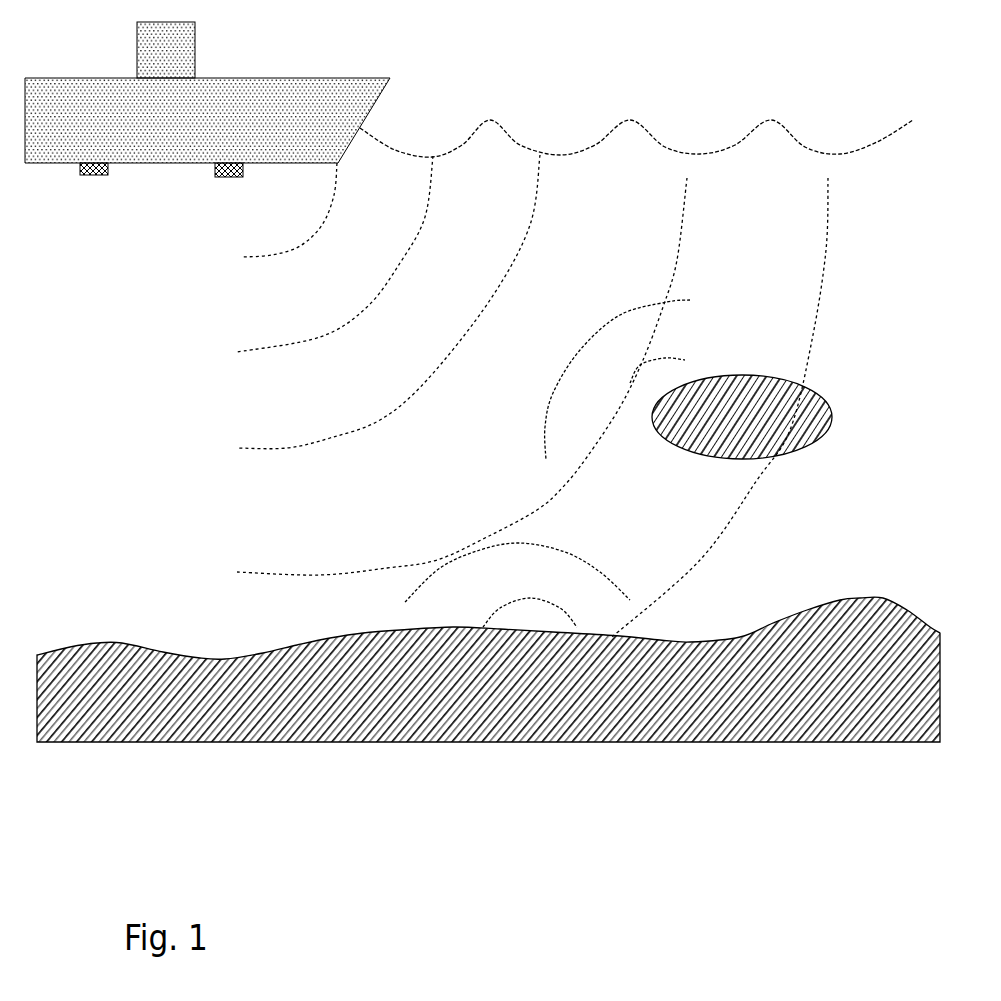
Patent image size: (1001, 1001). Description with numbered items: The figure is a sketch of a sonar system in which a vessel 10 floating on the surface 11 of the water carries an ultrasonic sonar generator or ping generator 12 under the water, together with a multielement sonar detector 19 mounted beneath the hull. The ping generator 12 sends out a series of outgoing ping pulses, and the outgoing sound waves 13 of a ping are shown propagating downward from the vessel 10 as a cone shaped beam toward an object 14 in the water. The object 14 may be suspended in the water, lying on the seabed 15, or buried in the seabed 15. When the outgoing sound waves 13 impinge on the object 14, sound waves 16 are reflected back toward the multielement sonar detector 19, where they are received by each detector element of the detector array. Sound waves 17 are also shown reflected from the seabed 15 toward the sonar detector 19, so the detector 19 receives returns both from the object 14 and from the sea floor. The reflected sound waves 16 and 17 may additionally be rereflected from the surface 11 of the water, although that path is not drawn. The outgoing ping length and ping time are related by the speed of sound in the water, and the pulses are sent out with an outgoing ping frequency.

The vessel 10 is at (375, 102).
The surface of the water 11 is at (510, 135).
The ping generator 12 is at (230, 178).
The outgoing sound waves 13 is at (255, 263).
The object 14 is at (830, 417).
The seabed 15 is at (837, 596).
The reflected sound waves 16 is at (690, 300).
The sound waves reflected from the seabed 17 is at (597, 564).
The multielement sonar detector 19 is at (97, 174).